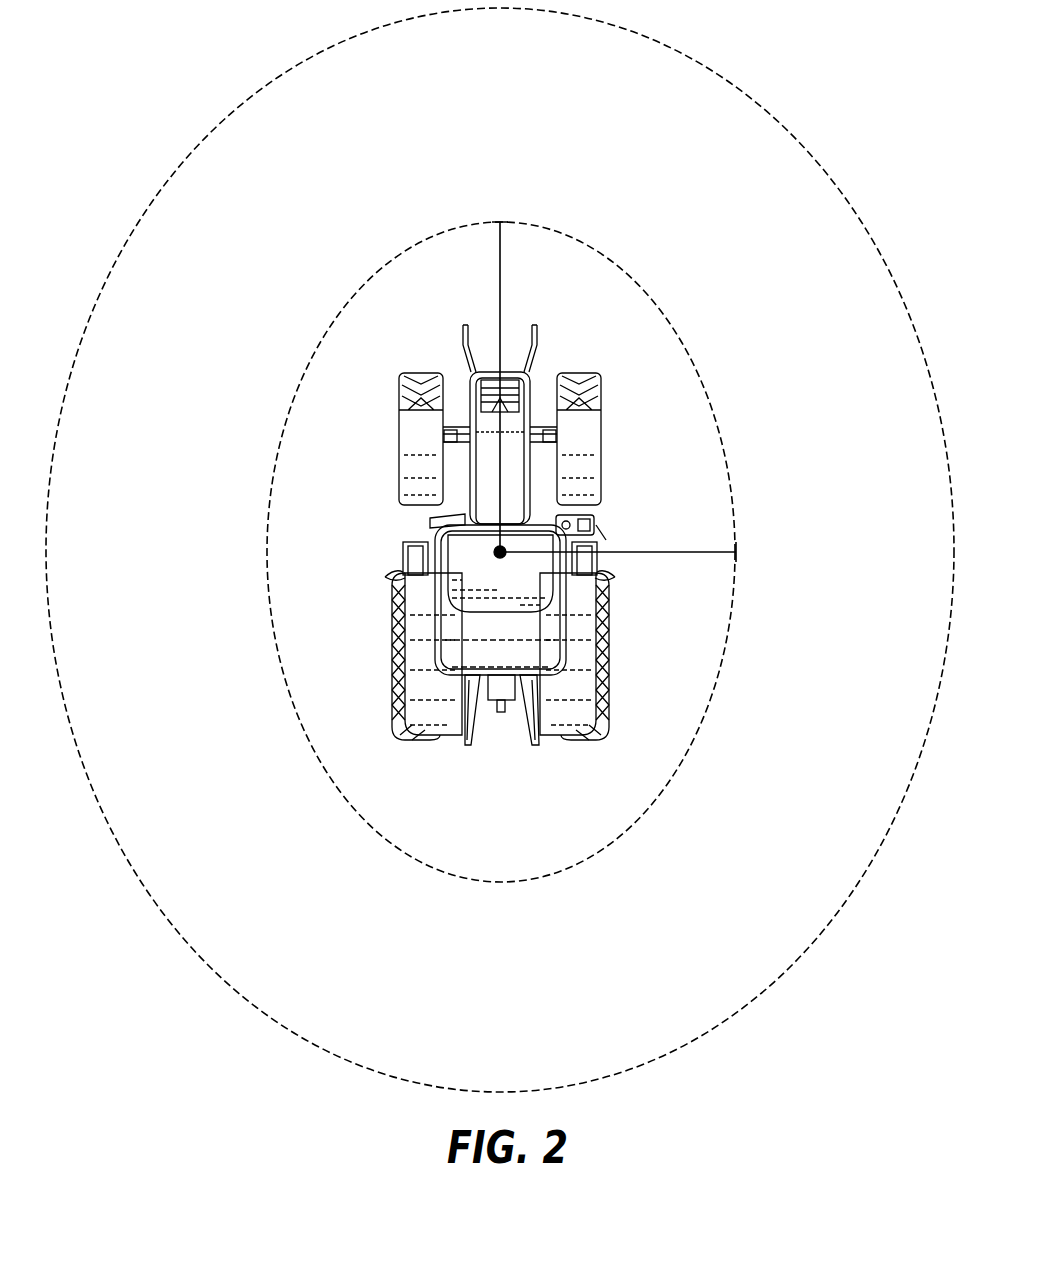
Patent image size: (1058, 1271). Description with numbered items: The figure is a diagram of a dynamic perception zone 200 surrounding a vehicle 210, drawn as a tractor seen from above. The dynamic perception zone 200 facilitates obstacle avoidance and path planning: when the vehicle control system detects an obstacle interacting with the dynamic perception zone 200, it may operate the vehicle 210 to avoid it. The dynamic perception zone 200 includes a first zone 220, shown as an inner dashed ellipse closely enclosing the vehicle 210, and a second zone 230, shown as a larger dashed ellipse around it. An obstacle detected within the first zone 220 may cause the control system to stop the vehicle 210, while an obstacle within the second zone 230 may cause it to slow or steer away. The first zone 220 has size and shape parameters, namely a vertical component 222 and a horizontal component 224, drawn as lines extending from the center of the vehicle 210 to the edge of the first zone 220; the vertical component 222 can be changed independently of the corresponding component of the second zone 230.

The dynamic perception zone 200 is at (135, 104).
The vehicle 210 is at (485, 466).
The first zone 220 is at (340, 308).
The vertical component 222 is at (499, 311).
The horizontal component 224 is at (660, 556).
The second zone 230 is at (275, 81).